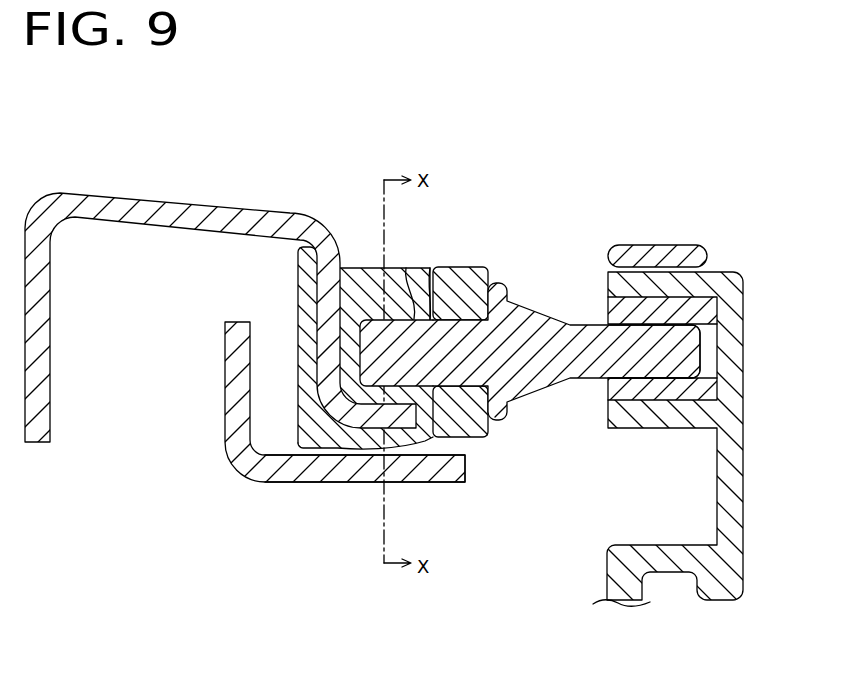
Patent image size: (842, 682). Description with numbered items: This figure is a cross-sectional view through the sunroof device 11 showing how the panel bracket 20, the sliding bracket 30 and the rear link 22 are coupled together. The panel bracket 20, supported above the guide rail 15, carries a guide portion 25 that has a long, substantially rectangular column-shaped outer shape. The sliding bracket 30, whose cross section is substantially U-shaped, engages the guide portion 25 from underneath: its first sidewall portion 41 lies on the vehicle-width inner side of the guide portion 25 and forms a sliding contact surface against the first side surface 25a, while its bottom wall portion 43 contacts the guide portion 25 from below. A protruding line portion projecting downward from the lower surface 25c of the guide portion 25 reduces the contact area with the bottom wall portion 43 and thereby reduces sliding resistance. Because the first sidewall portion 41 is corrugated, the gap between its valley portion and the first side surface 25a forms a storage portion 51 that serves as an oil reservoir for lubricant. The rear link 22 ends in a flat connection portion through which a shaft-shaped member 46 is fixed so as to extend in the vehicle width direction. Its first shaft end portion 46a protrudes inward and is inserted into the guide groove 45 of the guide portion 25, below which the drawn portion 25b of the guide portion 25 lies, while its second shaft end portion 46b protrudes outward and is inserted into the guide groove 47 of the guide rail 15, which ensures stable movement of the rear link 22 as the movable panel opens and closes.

The sunroof device 11 is at (691, 128).
The guide rail 15 is at (717, 271).
The panel bracket 20 is at (176, 205).
The rear link 22 is at (463, 267).
The guide portion 25 is at (368, 268).
The first side surface 25a is at (297, 288).
The second wall portion of holder 25b is at (437, 437).
The lower surface 25c is at (360, 449).
The sliding bracket 30 is at (519, 577).
The first sidewall portion 41 is at (225, 359).
The bottom wall portion 43 is at (307, 483).
The guide groove 45 is at (415, 312).
The shaft-shaped member 46 is at (545, 319).
The first shaft end portion 46a is at (373, 343).
The second shaft end portion 46b is at (700, 361).
The guide groove 47 is at (612, 398).
The storage portion 51 is at (250, 364).